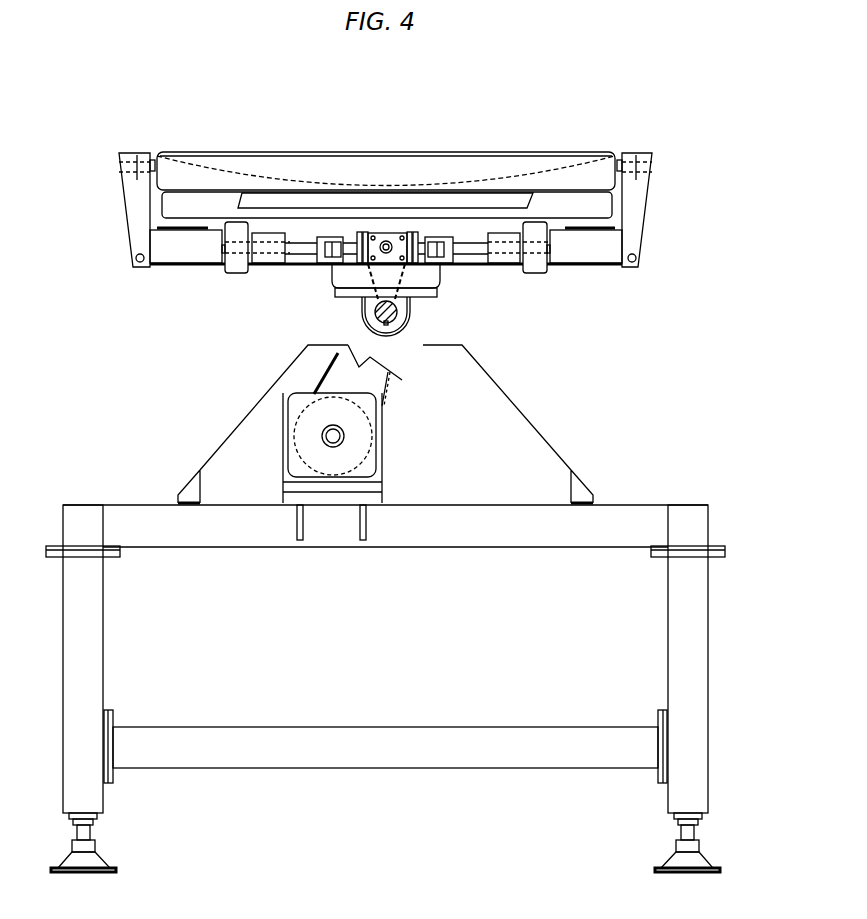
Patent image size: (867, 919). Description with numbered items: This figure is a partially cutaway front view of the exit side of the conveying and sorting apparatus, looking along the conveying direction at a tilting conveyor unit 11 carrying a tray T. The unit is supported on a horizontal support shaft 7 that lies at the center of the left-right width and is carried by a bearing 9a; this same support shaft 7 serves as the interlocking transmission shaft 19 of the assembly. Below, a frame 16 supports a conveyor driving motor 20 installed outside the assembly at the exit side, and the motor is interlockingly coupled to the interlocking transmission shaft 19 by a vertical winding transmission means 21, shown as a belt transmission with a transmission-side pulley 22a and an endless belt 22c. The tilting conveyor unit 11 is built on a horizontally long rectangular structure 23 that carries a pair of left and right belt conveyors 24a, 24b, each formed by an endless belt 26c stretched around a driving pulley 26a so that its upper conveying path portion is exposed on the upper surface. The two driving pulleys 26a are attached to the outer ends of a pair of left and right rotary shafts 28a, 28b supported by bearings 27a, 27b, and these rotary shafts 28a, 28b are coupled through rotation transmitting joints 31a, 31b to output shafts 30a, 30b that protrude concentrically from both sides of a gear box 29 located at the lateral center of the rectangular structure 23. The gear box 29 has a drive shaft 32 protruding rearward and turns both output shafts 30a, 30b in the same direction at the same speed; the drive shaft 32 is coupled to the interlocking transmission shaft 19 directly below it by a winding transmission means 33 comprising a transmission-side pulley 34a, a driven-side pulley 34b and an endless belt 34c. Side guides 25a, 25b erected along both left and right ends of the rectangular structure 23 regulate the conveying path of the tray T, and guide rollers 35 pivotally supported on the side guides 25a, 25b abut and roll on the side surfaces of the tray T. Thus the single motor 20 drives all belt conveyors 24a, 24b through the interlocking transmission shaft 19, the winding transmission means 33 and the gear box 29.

The support shaft 7 is at (400, 313).
The bearing 9a is at (410, 327).
The tilting conveyor unit 11 is at (668, 178).
The frame 16 is at (446, 545).
The interlocking transmission shaft 19 is at (397, 342).
The conveyor driving motor 20 is at (368, 457).
The winding transmission means 21 is at (316, 382).
The transmission-side pulley 22a is at (300, 430).
The endless belt 22c is at (384, 397).
The rectangular structure 23 is at (192, 226).
The belt conveyor 24a is at (538, 219).
The belt conveyor 24b is at (233, 219).
The side guide 25a is at (637, 205).
The side guide 25b is at (137, 213).
The driving pulley 26a is at (207, 257).
The endless belt 26c is at (233, 272).
The bearing 27a is at (507, 237).
The bearing 27b is at (268, 237).
The rotary shaft 28a is at (473, 246).
The rotary shaft 28b is at (298, 247).
The gear box 29 is at (390, 237).
The output shaft 30a is at (418, 237).
The output shaft 30b is at (338, 237).
The rotation transmitting joint 31a is at (447, 257).
The rotation transmitting joint 31b is at (310, 250).
The drive shaft 32 is at (378, 236).
The winding transmission means 33 is at (412, 275).
The transmission-side pulley 34a is at (375, 225).
The driven-side pulley 34b is at (368, 313).
The endless belt 34c is at (363, 278).
The guide roller 35 is at (128, 157).
The tray T is at (595, 208).